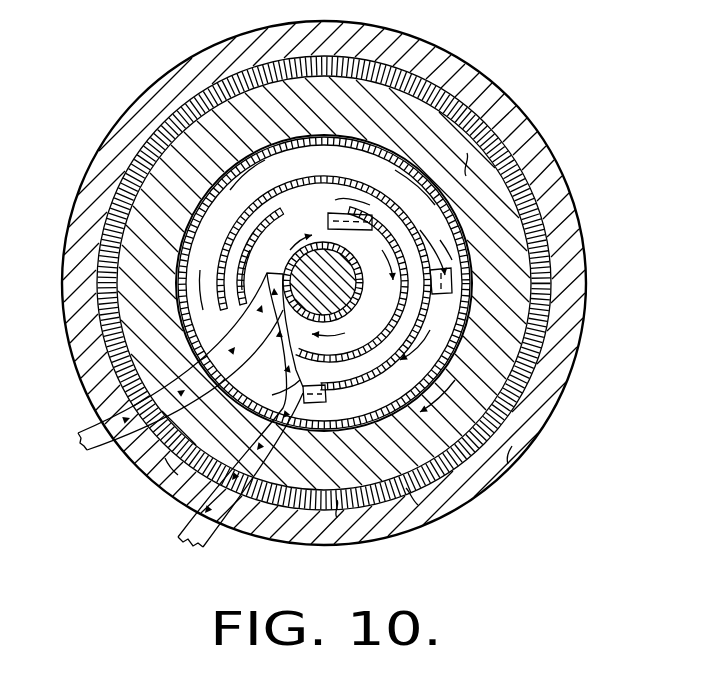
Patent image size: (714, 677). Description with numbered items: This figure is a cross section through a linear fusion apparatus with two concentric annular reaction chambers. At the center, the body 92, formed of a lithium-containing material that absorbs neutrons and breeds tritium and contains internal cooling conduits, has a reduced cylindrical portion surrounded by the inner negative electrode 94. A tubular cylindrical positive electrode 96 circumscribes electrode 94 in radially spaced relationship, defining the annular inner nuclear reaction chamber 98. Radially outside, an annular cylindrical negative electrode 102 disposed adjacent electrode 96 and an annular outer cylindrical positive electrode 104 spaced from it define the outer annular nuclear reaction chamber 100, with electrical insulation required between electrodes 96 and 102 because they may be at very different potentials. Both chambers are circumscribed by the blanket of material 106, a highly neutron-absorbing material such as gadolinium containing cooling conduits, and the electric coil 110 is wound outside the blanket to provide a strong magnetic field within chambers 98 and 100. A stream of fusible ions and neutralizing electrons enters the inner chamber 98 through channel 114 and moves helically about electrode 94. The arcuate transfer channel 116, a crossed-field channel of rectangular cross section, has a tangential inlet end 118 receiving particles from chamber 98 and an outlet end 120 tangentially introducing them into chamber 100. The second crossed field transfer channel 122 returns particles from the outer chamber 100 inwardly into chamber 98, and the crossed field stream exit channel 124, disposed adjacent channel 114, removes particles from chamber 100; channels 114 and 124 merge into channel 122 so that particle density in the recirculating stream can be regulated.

The body 92 is at (172, 110).
The inner negative electrode 94 is at (190, 247).
The cylindrical positive electrode 96 is at (405, 343).
The annular inner nuclear reaction chamber 98 is at (135, 192).
The outer annular nuclear reaction chamber 100 is at (444, 242).
The annular cylindrical negative electrode 102 is at (512, 446).
The annular outer cylindrical positive electrode 104 is at (418, 505).
The blanket of material 106 is at (467, 153).
The electric coil 110 is at (461, 68).
The channel 114 is at (90, 435).
The transfer channel 116 is at (447, 277).
The tangential inlet end 118 is at (303, 212).
The outlet end 120 is at (444, 322).
The second crossed field transfer channel 122 is at (178, 475).
The crossed field stream exit channel 124 is at (204, 547).